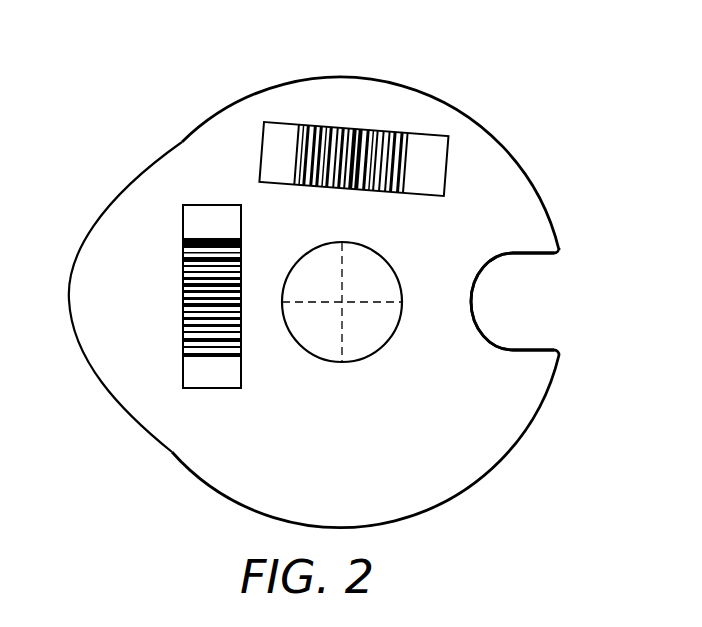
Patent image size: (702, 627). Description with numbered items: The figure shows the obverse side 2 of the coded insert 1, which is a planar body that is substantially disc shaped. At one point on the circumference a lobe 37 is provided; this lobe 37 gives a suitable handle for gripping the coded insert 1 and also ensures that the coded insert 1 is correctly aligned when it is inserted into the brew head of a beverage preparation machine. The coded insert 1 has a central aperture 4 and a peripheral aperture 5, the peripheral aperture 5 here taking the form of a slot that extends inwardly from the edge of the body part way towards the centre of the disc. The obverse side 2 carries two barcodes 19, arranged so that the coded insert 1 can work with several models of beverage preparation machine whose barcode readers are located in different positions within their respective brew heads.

The coded insert 1 is at (306, 283).
The obverse side 2 is at (492, 434).
The central aperture 4 is at (375, 275).
The peripheral aperture 5 is at (531, 305).
The barcode 19 is at (373, 140).
The lobe 37 is at (83, 262).